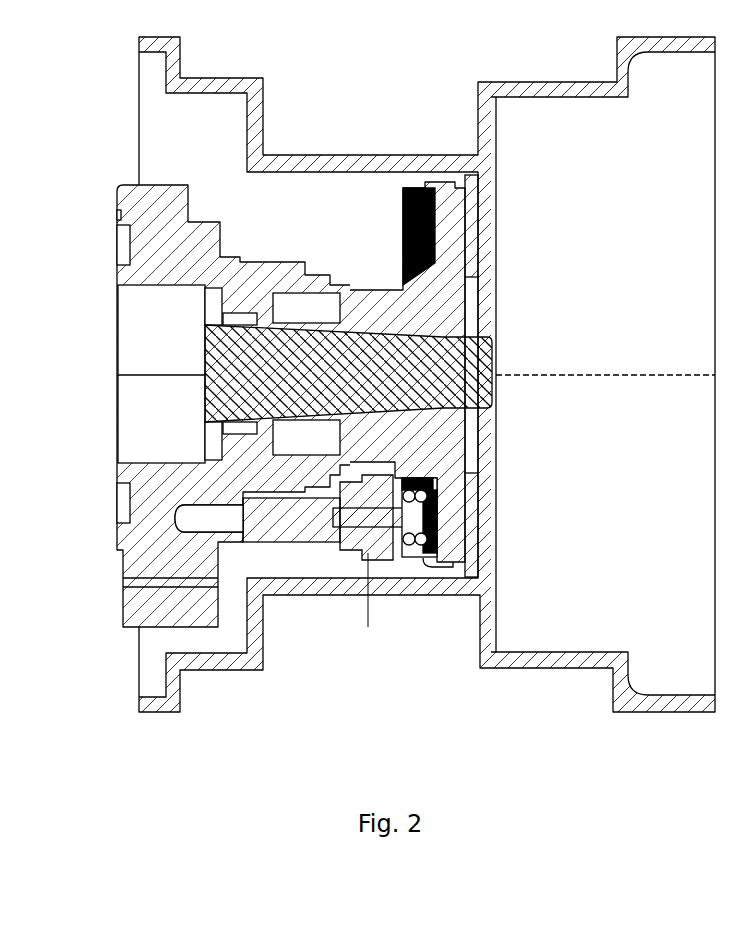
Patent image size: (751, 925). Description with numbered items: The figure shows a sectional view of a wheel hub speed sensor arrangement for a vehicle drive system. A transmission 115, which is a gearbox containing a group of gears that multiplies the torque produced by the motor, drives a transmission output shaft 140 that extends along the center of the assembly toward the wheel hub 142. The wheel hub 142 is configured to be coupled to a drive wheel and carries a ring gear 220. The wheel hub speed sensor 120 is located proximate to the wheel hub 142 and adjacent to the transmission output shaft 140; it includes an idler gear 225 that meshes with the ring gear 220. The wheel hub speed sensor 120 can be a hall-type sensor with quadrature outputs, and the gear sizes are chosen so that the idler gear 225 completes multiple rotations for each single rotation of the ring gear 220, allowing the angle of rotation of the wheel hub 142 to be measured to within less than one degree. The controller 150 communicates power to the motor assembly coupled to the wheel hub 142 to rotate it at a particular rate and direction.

The transmission 115 is at (125, 204).
The wheel hub speed sensor 120 is at (308, 563).
The transmission output shaft 140 is at (483, 365).
The wheel hub 142 is at (460, 243).
The controller 150 is at (348, 163).
The ring gear 220 is at (415, 192).
The idler gear 225 is at (415, 553).